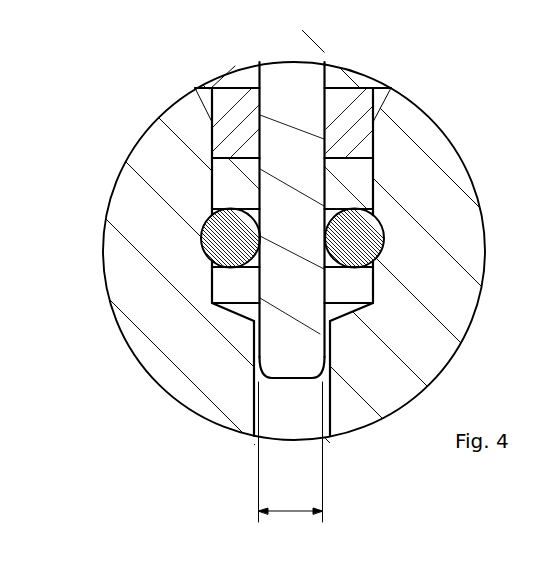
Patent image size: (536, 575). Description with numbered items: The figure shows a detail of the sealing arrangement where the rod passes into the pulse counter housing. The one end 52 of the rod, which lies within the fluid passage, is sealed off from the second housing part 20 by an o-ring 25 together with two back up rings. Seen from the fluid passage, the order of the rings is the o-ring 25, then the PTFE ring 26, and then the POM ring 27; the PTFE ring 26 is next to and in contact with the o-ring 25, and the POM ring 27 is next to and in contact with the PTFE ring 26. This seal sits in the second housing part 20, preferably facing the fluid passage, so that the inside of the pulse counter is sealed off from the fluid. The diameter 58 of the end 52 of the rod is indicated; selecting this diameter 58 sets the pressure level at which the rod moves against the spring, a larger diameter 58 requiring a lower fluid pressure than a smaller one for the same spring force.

The second housing part 20 is at (180, 350).
The o-ring 25 is at (228, 233).
The PTFE ring 26 is at (223, 168).
The POM ring 27 is at (222, 126).
The end of the rod 52 is at (288, 78).
The diameter 58 is at (291, 463).